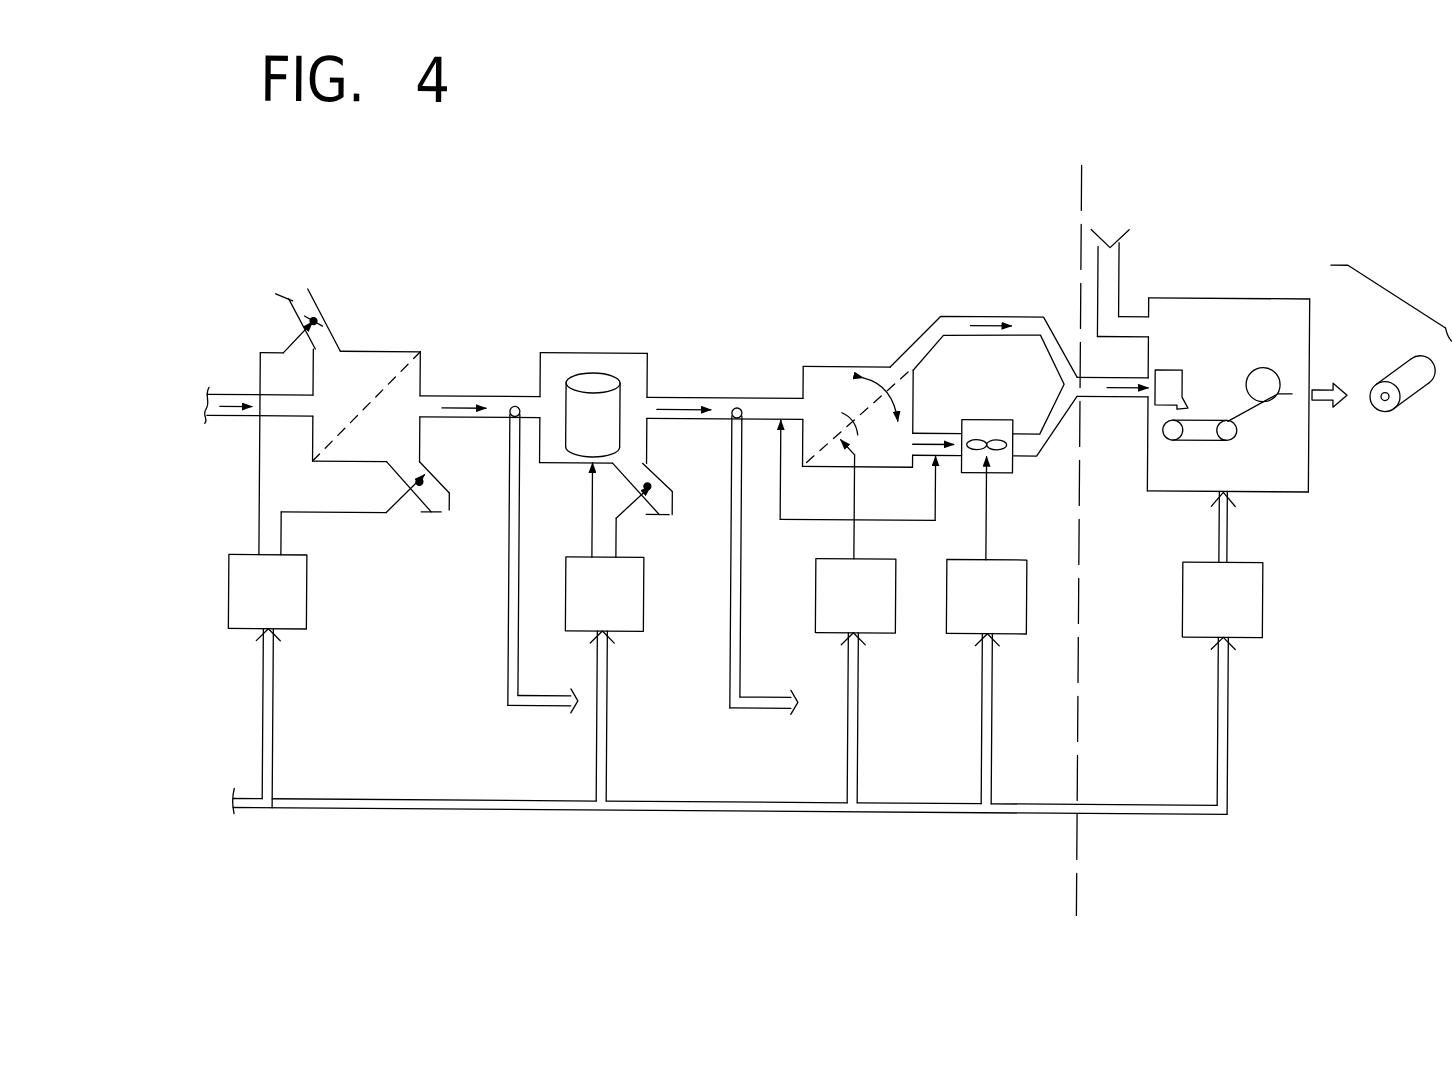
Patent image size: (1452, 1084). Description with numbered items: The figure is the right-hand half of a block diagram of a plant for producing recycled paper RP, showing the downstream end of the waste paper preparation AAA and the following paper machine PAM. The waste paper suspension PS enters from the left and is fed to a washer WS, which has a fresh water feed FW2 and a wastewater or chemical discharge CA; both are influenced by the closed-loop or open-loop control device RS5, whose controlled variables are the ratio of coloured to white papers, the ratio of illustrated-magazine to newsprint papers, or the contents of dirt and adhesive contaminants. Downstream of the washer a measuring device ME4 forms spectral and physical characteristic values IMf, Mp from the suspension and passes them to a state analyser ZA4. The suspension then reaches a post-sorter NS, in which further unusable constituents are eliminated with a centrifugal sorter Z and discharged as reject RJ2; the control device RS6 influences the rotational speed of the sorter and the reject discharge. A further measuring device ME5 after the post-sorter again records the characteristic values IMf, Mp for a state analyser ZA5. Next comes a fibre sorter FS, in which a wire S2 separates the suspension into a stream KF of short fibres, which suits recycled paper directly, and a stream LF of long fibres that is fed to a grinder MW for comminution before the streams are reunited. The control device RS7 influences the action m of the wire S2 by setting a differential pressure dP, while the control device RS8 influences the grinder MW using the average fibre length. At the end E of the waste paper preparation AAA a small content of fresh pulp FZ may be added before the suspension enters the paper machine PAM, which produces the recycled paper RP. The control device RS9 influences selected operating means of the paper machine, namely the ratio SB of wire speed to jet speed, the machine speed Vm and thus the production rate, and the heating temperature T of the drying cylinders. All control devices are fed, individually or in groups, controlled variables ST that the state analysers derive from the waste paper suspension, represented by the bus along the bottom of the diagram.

The waste paper preparation AAA is at (719, 253).
The waste paper suspension PS is at (238, 404).
The washer WS is at (388, 350).
The fresh water feed FW2 is at (295, 300).
The closed-loop or open-loop control device RS5 is at (275, 664).
The chemical discharge CA is at (436, 506).
The measuring device ME4 is at (514, 406).
The state analyser ZA4 is at (547, 693).
The spectral characteristic values IMf is at (510, 438).
The physical characteristic values Mp is at (595, 472).
The post-sorter NS is at (601, 350).
The centrifugal sorter Z is at (571, 408).
The closed-loop or open-loop control device RS6 is at (619, 721).
The reject RJ2 is at (661, 511).
The measuring device ME5 is at (737, 406).
The state analyser ZA5 is at (757, 693).
The fibre sorter FS is at (858, 362).
The pressure difference dP is at (855, 400).
The flap adjustment m is at (866, 432).
The wire S2 is at (822, 447).
The short-fibre pulp stream KF is at (929, 328).
The long-fibre pulp stream LF is at (937, 430).
The grinder MW is at (1002, 415).
The closed-loop or open-loop control device RS7 is at (856, 712).
The closed-loop or open-loop control device RS8 is at (994, 716).
The fresh pulp FZ is at (1119, 257).
The paper machine PAM is at (1232, 292).
The inlet E is at (1118, 393).
The recycled paper RP is at (1395, 364).
The closed-loop or open-loop control device RS9 is at (1230, 709).
The ratio of wire speed to jet speed SB is at (1228, 510).
The heating temperature T is at (1228, 539).
The speed of the paper machine Vm is at (1220, 523).
The controlled variables ST is at (792, 812).